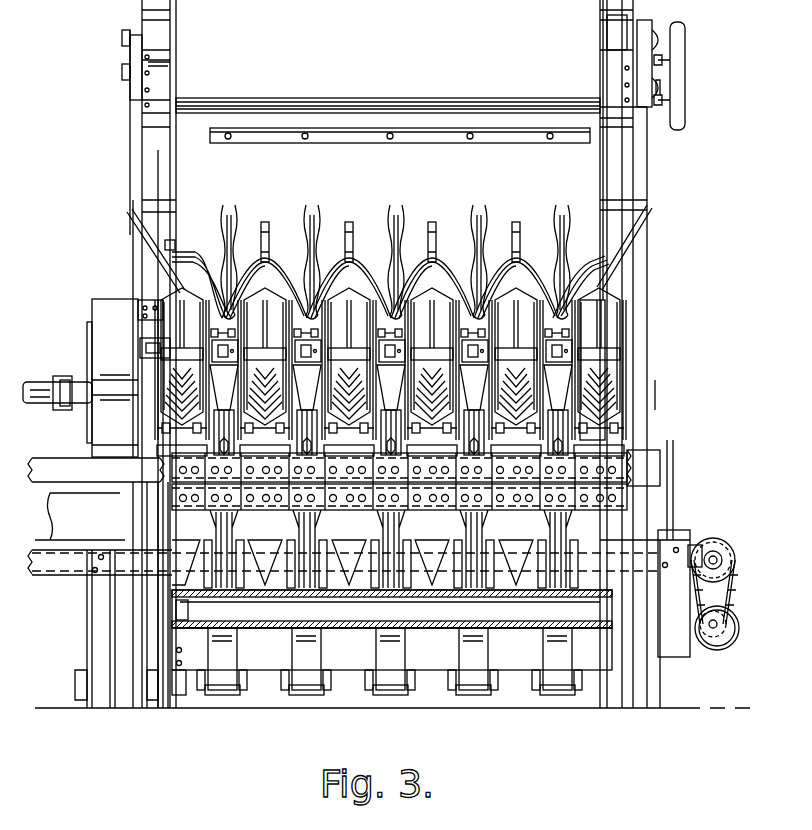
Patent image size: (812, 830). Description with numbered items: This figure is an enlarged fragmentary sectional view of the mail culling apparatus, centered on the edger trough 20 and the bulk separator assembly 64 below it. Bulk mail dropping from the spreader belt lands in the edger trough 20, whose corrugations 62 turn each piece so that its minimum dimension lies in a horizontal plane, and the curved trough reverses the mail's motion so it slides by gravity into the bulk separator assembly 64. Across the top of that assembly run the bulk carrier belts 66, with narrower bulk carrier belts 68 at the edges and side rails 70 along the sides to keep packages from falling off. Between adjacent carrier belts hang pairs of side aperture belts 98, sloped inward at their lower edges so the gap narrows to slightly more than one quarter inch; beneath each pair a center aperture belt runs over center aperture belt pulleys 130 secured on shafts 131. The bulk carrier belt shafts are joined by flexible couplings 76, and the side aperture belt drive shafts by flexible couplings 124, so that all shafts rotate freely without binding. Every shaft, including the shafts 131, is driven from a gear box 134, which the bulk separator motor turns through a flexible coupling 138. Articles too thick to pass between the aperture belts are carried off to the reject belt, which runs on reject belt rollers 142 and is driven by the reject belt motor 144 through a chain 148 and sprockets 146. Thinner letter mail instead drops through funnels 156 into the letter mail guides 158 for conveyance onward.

The edger trough 20 is at (583, 190).
The corrugations 62 is at (548, 290).
The bulk separator assembly 64 is at (652, 395).
The bulk carrier belts 66 is at (350, 258).
The bulk carrier belts 68 is at (600, 372).
The side rails 70 is at (148, 241).
The flexible couplings 76 is at (148, 374).
The side aperture belts 98 is at (226, 410).
The flexible couplings 124 is at (224, 216).
The center aperture belt pulleys 130 is at (248, 400).
The shafts 131 is at (390, 439).
The gear box 134 is at (115, 320).
The flexible coupling 138 is at (65, 412).
The reject belt rollers 142 is at (733, 591).
The reject belt motor 144 is at (730, 640).
The sprockets 146 is at (714, 548).
The chain 148 is at (736, 590).
The funnels 156 is at (380, 515).
The letter mail guides 158 is at (305, 565).